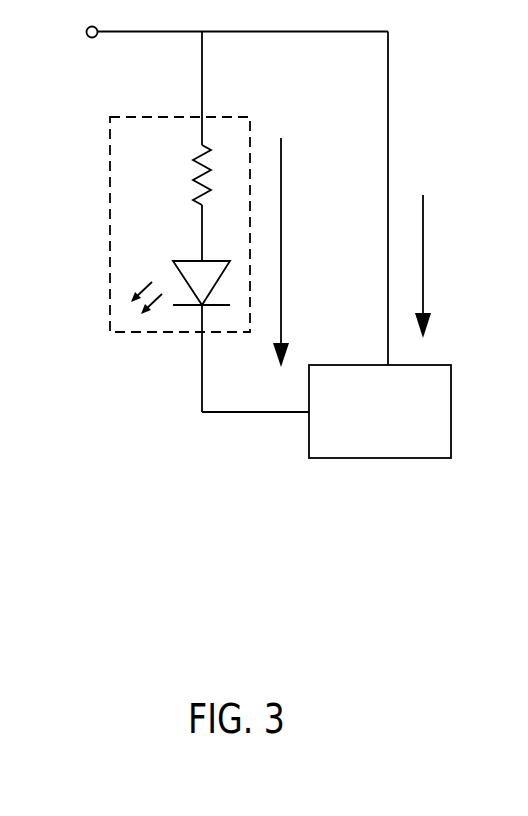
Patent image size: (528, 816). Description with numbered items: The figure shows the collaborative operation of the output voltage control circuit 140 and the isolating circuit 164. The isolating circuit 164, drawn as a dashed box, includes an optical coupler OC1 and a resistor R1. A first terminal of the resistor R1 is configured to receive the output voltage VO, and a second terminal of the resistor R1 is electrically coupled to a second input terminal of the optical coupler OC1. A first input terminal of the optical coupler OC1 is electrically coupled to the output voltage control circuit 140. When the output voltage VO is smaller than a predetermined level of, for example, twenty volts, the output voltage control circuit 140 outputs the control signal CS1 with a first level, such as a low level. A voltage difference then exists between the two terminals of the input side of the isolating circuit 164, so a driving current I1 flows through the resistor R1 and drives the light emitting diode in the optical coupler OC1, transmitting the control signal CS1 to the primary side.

The isolating circuit 164 is at (173, 270).
The output voltage control circuit 140 is at (401, 425).
The resistor R1 is at (178, 172).
The optical coupler OC1 is at (180, 271).
The control signal CS1 is at (255, 358).
The driving current I1 is at (280, 229).
The output voltage VO is at (213, 190).